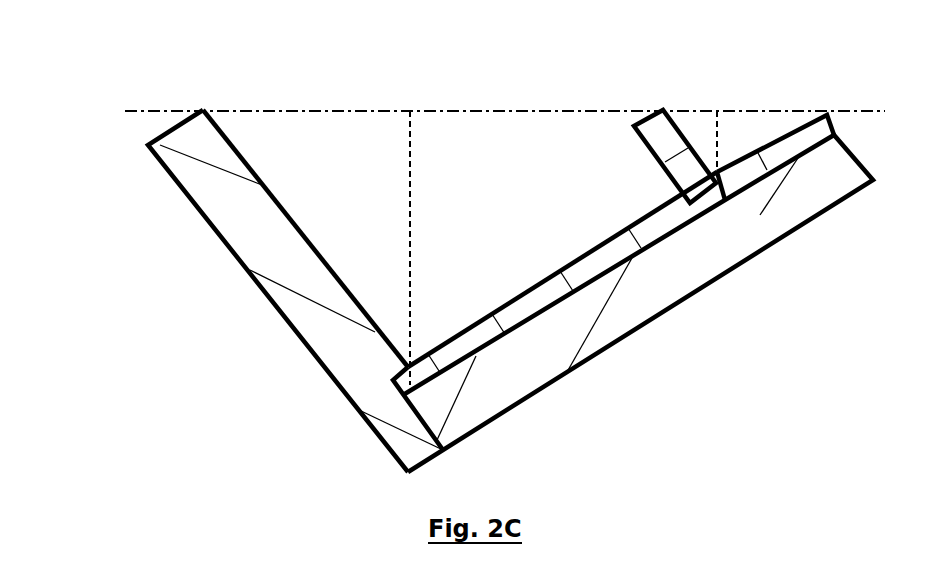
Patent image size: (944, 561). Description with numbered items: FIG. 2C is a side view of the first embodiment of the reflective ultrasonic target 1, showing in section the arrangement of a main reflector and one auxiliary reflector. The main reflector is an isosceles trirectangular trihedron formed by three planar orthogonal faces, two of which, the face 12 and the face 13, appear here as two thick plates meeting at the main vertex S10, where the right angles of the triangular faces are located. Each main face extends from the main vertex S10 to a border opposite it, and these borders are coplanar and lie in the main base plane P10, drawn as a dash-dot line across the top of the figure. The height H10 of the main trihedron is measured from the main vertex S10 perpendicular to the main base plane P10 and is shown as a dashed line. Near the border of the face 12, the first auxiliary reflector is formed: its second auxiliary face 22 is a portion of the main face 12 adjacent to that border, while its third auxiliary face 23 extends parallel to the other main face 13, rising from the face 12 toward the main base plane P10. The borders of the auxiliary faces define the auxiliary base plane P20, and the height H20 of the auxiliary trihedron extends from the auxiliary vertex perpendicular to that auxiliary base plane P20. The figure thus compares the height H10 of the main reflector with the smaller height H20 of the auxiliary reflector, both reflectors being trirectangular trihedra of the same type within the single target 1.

The reflective ultrasonic target 1 is at (460, 238).
The planar orthogonal face 12 is at (634, 221).
The planar orthogonal face 13 is at (294, 214).
The second auxiliary face 22 is at (798, 122).
The third auxiliary face 23 is at (653, 131).
The main base plane P10 is at (531, 106).
The auxiliary base plane P20 is at (817, 57).
The height of the main reflector H10 is at (414, 187).
The height of the auxiliary reflector H20 is at (722, 139).
The main vertex S10 is at (412, 354).